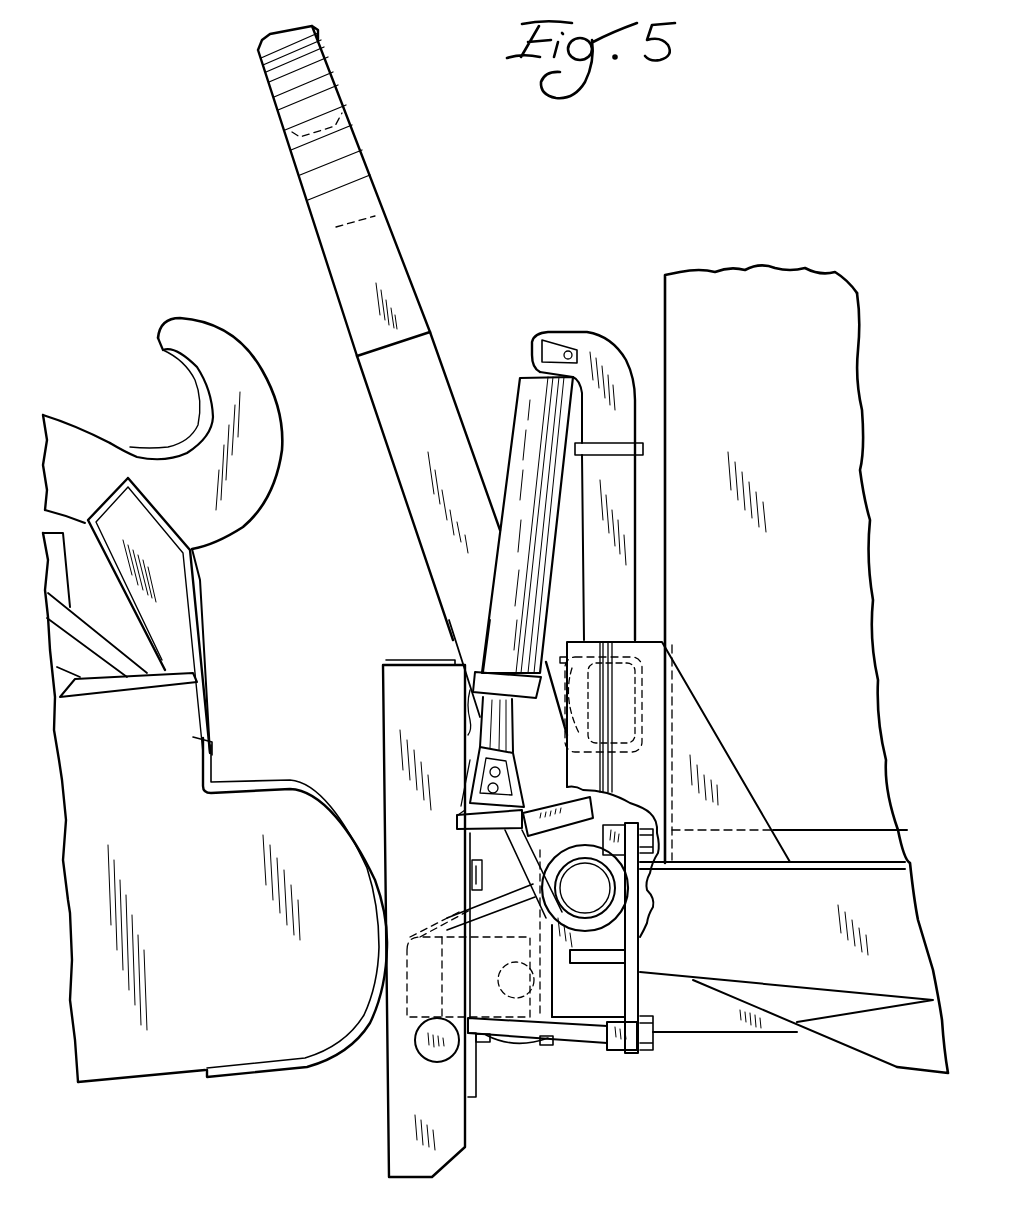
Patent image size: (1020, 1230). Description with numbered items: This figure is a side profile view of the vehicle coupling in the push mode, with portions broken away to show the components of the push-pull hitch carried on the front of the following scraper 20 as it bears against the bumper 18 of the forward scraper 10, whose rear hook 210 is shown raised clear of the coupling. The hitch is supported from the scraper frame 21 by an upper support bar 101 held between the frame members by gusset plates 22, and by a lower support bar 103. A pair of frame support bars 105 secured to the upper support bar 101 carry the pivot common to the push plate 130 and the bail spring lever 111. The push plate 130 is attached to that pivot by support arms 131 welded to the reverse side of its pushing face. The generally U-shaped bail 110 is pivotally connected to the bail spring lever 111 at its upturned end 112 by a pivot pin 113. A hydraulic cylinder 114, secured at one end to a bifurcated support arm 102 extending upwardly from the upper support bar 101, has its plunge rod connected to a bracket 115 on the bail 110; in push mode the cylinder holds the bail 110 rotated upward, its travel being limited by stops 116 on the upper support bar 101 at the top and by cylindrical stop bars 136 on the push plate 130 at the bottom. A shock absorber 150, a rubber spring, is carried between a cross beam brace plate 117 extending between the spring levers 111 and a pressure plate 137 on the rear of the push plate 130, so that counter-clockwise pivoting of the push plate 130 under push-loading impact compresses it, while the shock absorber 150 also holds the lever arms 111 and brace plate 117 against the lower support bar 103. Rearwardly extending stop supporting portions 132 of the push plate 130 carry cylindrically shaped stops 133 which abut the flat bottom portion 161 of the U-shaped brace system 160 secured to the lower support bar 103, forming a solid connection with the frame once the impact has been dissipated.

The forward scraper 10 is at (121, 1102).
The bumper 18 is at (343, 810).
The following scraper 20 is at (822, 272).
The scraper frame 21 is at (660, 915).
The gusset plate 22 is at (706, 727).
The upper support bar 101 is at (642, 697).
The bifurcated support arm 102 is at (608, 348).
The lower support bar 103 is at (652, 998).
The frame support bar 105 is at (548, 663).
The bail 110 is at (363, 160).
The bail spring lever 111 is at (506, 858).
The upturned end 112 is at (604, 997).
The pivot pin 113 is at (604, 900).
The hydraulic cylinder 114 is at (518, 425).
The bracket 115 is at (462, 825).
The stop 116 is at (537, 705).
The cross beam brace plate 117 is at (550, 1046).
The push plate 130 is at (372, 712).
The support arm 131 is at (470, 735).
The stop supporting portion 132 is at (500, 1006).
The cylindrically shaped stop 133 is at (528, 950).
The cylindrical stop bar 136 is at (450, 1060).
The pressure plate 137 is at (480, 1050).
The shock absorber 150 is at (506, 1044).
The brace system 160 is at (578, 1054).
The bottom portion 161 is at (493, 976).
The hook 210 is at (248, 306).